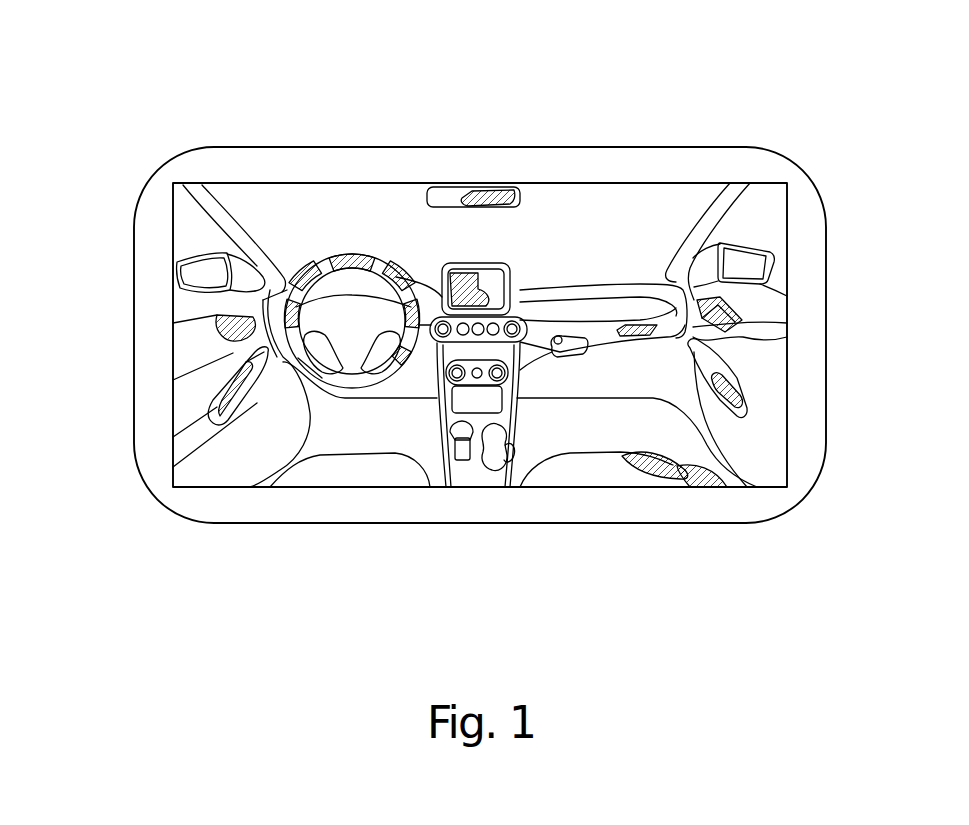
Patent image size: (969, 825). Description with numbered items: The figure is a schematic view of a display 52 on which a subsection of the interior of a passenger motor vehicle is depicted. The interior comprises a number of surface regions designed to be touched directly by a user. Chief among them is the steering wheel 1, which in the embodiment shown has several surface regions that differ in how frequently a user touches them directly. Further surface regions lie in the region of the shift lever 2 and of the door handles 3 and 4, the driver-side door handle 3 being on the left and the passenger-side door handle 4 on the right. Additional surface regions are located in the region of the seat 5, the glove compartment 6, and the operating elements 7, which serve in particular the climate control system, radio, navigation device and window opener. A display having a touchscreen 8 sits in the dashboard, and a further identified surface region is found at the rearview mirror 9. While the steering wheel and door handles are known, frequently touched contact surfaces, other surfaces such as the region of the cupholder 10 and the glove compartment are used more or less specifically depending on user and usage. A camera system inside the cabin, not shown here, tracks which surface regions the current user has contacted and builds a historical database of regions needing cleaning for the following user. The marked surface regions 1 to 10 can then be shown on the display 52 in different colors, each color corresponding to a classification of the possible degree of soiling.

The steering wheel 1 is at (348, 256).
The shift lever 2 is at (463, 432).
The driver-side door handle 3 is at (222, 393).
The passenger-side door handle 4 is at (737, 393).
The seat 5 is at (703, 478).
The glove compartment 6 is at (573, 335).
The operating elements 7 is at (497, 373).
The display having touchscreen 8 is at (443, 266).
The rearview mirror 9 is at (492, 192).
The cupholder 10 is at (490, 447).
The display 52 is at (134, 442).